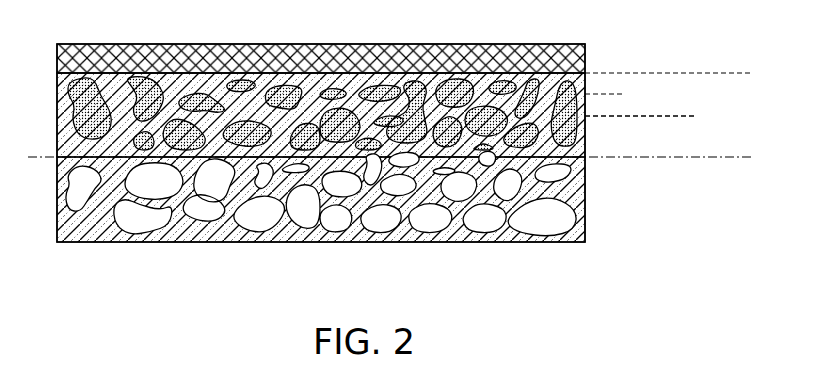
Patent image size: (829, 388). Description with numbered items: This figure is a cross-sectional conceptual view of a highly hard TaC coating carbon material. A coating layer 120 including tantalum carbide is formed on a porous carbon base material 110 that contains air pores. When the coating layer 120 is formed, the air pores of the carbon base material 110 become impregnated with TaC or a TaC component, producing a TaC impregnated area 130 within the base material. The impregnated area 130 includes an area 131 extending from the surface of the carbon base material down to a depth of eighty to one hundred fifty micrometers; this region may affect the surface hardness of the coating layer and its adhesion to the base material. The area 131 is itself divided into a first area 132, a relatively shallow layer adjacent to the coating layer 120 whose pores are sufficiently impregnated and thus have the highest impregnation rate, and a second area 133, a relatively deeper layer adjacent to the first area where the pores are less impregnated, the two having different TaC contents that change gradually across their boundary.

The carbon base material 110 is at (587, 203).
The coating layer 120 is at (587, 53).
The TaC impregnated area 130 is at (746, 75).
The area from the surface up to a depth of 80 μm to 150 μm 131 is at (688, 75).
The first area 132 is at (629, 75).
The second area 133 is at (629, 96).